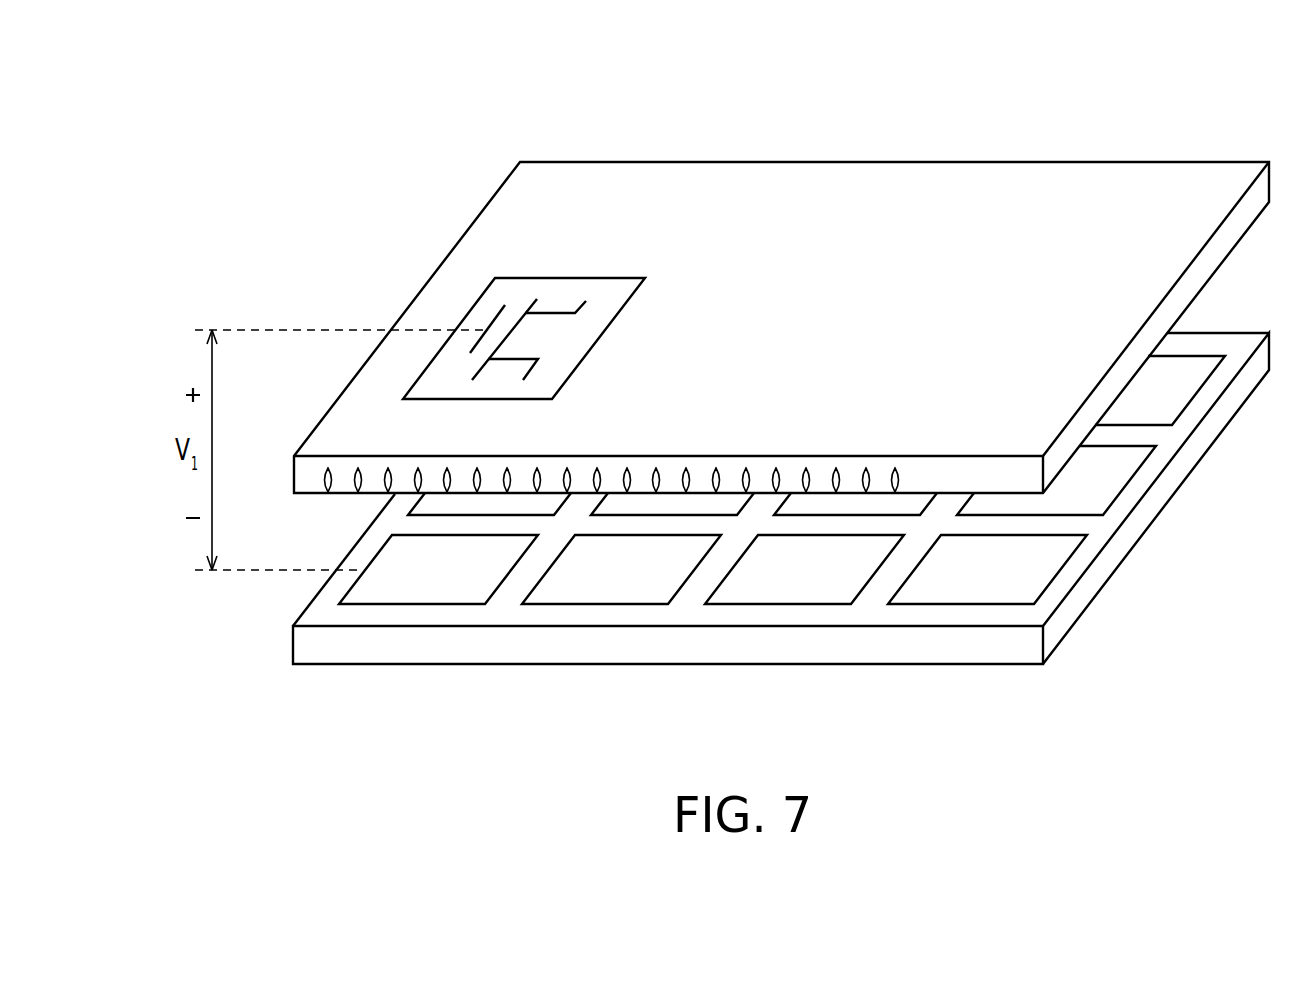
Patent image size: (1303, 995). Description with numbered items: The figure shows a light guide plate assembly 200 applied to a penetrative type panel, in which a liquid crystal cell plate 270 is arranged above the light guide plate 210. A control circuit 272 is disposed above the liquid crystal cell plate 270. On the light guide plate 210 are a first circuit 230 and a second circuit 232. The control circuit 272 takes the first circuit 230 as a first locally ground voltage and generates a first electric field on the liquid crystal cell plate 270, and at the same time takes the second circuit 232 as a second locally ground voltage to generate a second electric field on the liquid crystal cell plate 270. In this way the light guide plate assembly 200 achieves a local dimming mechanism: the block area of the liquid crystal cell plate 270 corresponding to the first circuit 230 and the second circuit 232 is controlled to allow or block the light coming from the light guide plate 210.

The light guide plate assembly 200 is at (788, 398).
The light guide plate 210 is at (781, 531).
The first circuit 230 is at (415, 583).
The second circuit 232 is at (590, 583).
The liquid crystal cell plate 270 is at (781, 327).
The control circuit 272 is at (527, 308).